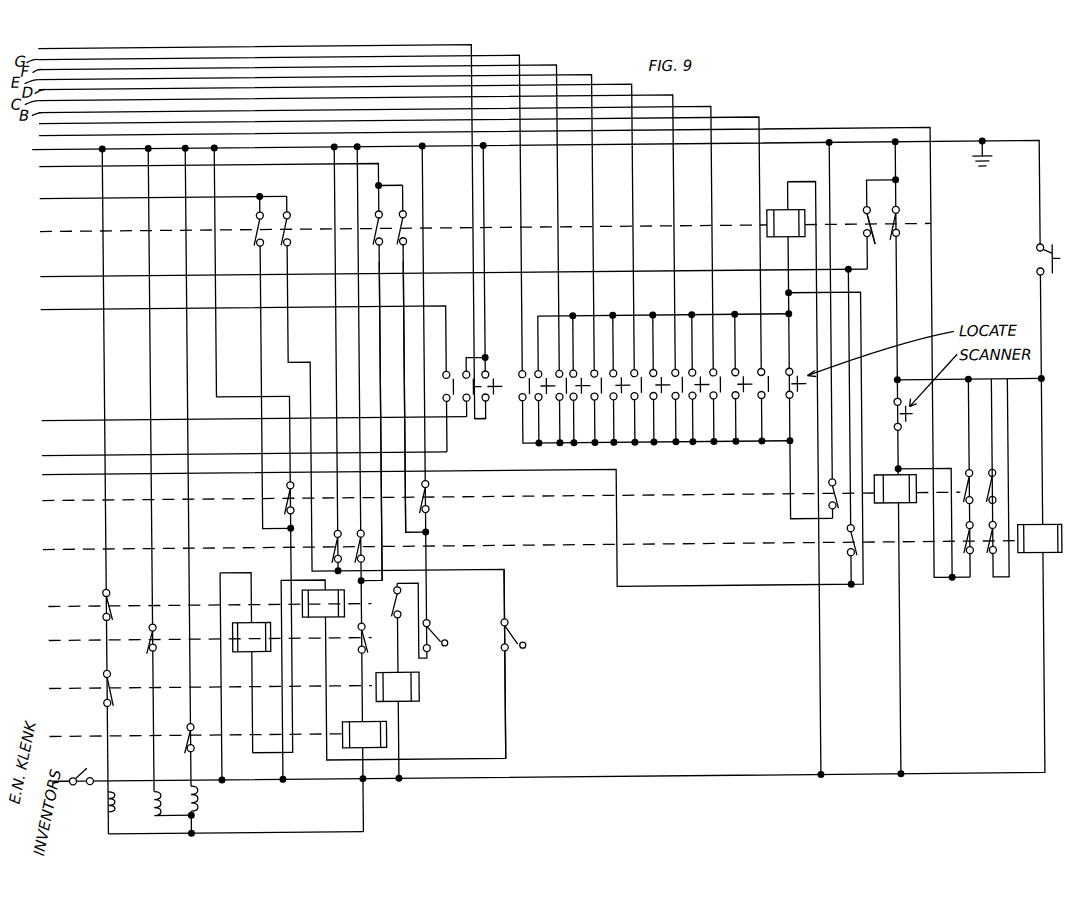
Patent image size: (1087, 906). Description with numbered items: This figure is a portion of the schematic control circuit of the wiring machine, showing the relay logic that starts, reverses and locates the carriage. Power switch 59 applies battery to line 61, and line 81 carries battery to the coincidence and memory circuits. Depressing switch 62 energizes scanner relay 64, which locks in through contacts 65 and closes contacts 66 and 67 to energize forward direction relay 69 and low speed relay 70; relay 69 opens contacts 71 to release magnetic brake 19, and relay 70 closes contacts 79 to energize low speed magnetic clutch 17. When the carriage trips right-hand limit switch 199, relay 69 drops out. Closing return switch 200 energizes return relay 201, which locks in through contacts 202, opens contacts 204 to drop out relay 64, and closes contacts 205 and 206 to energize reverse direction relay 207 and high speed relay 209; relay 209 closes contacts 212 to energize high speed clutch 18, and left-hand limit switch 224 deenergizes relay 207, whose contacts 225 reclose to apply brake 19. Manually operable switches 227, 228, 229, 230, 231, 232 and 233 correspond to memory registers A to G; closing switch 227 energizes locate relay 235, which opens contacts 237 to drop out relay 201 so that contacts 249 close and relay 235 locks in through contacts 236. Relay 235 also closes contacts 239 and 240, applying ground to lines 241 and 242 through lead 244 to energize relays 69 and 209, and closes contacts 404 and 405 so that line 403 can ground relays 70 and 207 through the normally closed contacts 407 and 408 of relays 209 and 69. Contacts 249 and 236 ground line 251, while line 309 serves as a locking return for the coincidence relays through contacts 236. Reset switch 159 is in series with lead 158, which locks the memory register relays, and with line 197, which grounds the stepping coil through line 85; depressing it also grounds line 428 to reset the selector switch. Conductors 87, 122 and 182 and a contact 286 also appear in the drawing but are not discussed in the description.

The line 428 is at (42, 44).
The conductor line 122 is at (52, 119).
The supply conductor 87 is at (42, 145).
The conductor 182 is at (58, 150).
The lead 244 is at (60, 166).
The line 403 is at (66, 198).
The line 309 is at (64, 278).
The line 197 is at (66, 305).
The lead 158 is at (66, 416).
The line 85 is at (138, 451).
The line 251 is at (68, 472).
The normally opened contacts 404 is at (256, 235).
The normally opened contacts 405 is at (294, 225).
The contacts 240 is at (383, 190).
The contacts 239 is at (406, 218).
The line 241 is at (405, 321).
The line 242 is at (381, 341).
The reset switch 159 is at (495, 382).
The manually operable switch 233 is at (546, 398).
The manually operable switch 232 is at (580, 398).
The manually operable switch 231 is at (615, 372).
The manually operable switch 230 is at (655, 372).
The manually operable switch 229 is at (693, 372).
The manually operable switch 228 is at (735, 372).
The scanner contact 286 is at (766, 402).
The manually operable switch 227 is at (802, 396).
The locate relay 235 is at (868, 214).
The contacts 236 is at (878, 250).
The contacts 237 is at (903, 237).
The contacts 249 is at (847, 546).
The switch 62 is at (900, 418).
The scanner relay 64 is at (890, 478).
The contacts 65 is at (960, 479).
The contacts 204 is at (967, 555).
The contacts 202 is at (994, 555).
The return relay 201 is at (1048, 558).
The return switch 200 is at (1044, 258).
The contacts 67 is at (286, 487).
The contacts 66 is at (428, 510).
The contacts 205 is at (331, 544).
The contacts 206 is at (366, 552).
The reverse direction relay 207 is at (312, 588).
The contacts 225 is at (103, 604).
The contacts 79 is at (146, 638).
The contacts 71 is at (109, 670).
The low speed relay 70 is at (246, 647).
The normally closed contacts 408 is at (364, 648).
The limit switch 199 is at (440, 639).
The limit switch 224 is at (519, 641).
The forward direction relay 69 is at (417, 687).
The high speed relay 209 is at (384, 734).
The contacts 212 is at (180, 734).
The line 61 is at (547, 777).
The power switch 59 is at (79, 768).
The line 81 is at (66, 782).
The magnetic brake 19 is at (102, 804).
The low speed magnetic clutch 17 is at (162, 808).
The high speed clutch 18 is at (198, 792).
The normally closed contacts 407 is at (296, 752).